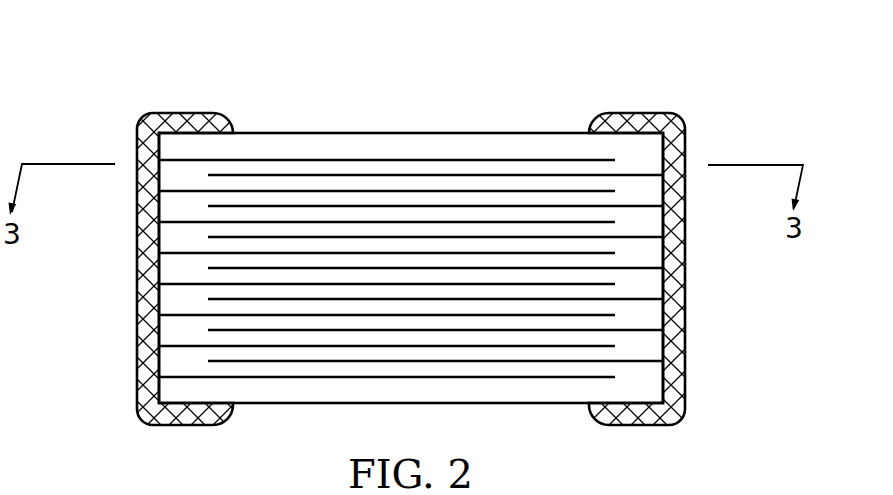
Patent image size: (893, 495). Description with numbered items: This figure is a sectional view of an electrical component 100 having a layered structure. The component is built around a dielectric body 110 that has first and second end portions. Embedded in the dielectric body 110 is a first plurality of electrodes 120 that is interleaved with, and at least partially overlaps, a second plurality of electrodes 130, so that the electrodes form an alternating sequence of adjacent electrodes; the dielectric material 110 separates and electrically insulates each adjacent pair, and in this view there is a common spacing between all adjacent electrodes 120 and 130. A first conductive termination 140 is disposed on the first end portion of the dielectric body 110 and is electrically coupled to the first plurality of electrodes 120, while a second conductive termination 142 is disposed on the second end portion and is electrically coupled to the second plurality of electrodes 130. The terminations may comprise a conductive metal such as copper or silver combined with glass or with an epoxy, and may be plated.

The electrical component 100 is at (140, 54).
The dielectric body 110 is at (668, 388).
The first plurality of electrodes 120 is at (160, 160).
The second plurality of electrodes 130 is at (662, 175).
The first conductive termination 140 is at (139, 148).
The second conductive termination 142 is at (685, 150).